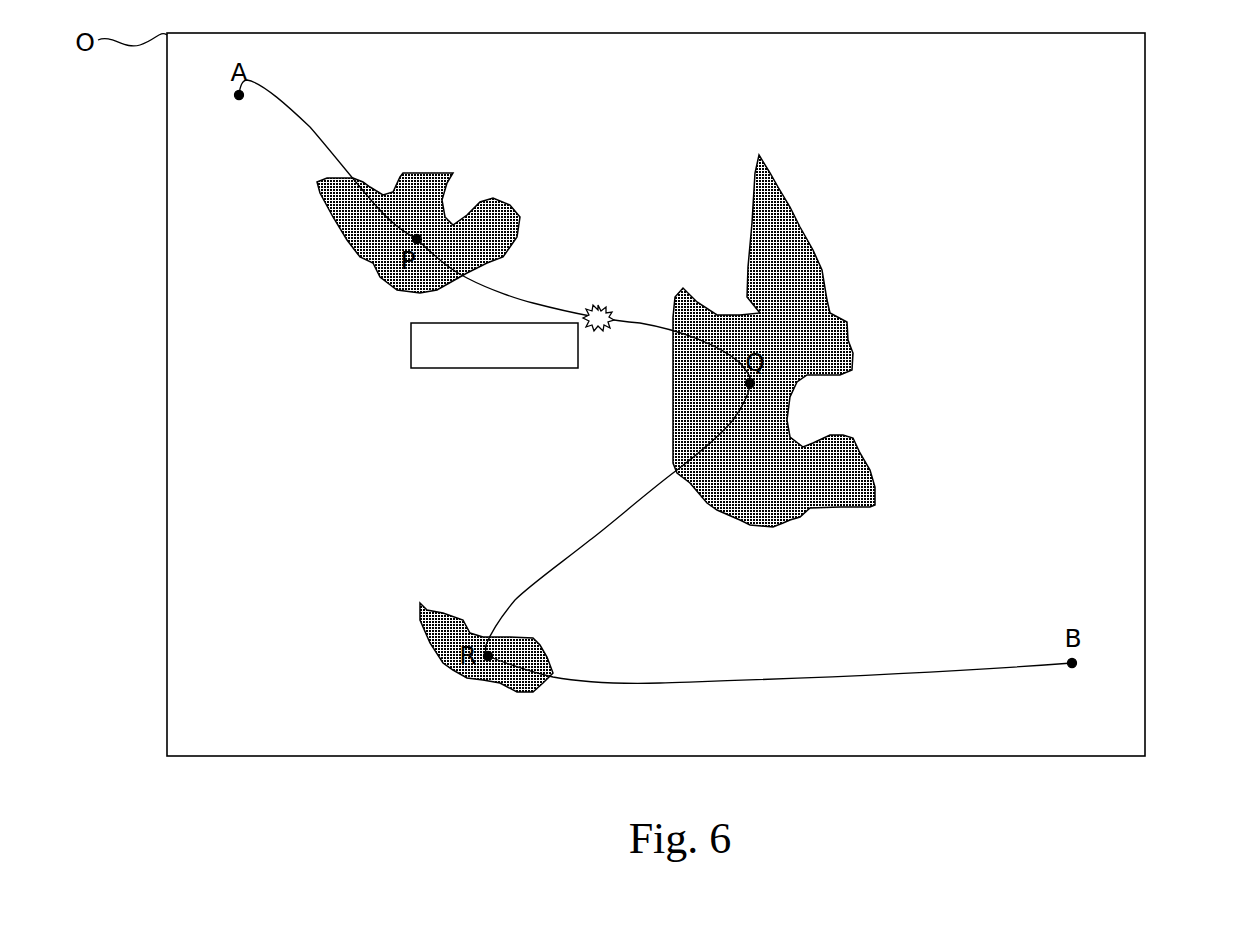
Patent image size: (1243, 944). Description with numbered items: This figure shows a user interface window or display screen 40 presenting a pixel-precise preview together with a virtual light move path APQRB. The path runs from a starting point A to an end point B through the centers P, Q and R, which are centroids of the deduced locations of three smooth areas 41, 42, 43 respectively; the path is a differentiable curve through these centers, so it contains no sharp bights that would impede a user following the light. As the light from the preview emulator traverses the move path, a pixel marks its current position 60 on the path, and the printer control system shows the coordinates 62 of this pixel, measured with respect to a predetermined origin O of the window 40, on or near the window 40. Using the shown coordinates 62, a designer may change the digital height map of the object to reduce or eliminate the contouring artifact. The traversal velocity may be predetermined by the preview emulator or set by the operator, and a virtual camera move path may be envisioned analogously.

The display screen 40 is at (1145, 134).
The smooth area 41 is at (332, 218).
The smooth area 42 is at (853, 352).
The smooth area 43 is at (537, 638).
The current position 60 is at (600, 305).
The coordinates 62 is at (410, 347).